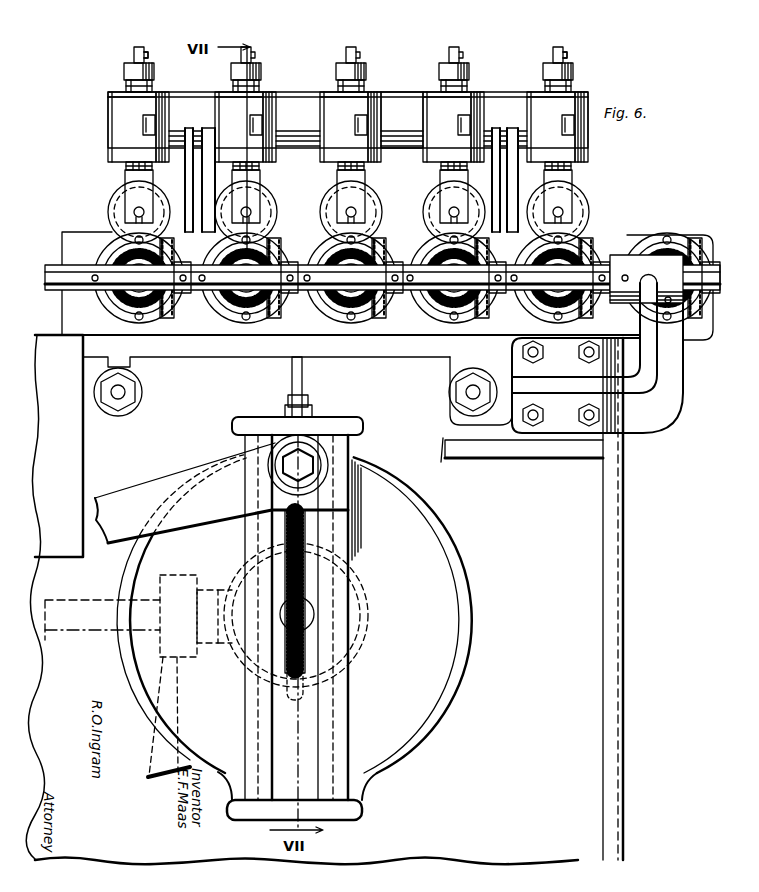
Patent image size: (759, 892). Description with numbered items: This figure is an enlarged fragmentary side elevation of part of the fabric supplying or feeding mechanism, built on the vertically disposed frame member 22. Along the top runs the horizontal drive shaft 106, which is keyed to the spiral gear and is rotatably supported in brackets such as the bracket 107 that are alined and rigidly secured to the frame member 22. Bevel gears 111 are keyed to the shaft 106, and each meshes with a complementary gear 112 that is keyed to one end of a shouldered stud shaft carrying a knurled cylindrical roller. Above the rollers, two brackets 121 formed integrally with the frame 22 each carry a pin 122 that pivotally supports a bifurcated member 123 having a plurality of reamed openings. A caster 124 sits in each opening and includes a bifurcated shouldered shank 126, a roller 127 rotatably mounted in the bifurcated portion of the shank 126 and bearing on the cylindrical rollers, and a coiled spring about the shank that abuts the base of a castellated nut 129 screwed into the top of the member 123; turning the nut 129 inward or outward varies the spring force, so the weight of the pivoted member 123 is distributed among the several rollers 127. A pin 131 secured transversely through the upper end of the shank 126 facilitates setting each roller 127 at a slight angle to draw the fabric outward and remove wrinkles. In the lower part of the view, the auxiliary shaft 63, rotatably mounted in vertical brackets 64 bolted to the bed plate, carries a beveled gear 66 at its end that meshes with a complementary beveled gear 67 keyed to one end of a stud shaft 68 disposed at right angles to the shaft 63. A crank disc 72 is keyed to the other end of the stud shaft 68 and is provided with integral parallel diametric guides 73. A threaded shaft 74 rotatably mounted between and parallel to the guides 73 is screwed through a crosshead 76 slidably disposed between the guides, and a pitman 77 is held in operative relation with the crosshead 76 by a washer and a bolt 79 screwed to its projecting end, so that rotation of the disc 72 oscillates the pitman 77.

The vertical frame member 22 is at (603, 708).
The auxiliary shaft 63 is at (67, 600).
The vertical brackets 64 is at (152, 743).
The beveled gear 66 is at (223, 587).
The complementary beveled gear 67 is at (368, 593).
The stud shaft 68 is at (300, 615).
The crank disc 72 is at (455, 673).
The parallel diametric guides 73 is at (246, 723).
The threaded shaft 74 is at (282, 541).
The crosshead 76 is at (282, 515).
The pitman 77 is at (145, 490).
The bolt 79 is at (303, 468).
The horizontal drive shaft 106 is at (52, 272).
The bracket 107 is at (668, 374).
The bevel gears 111 is at (281, 243).
The complementary gear 112 is at (115, 308).
The brackets 121 is at (176, 179).
The pin 122 is at (145, 124).
The bifurcated member 123 is at (110, 111).
The caster 124 is at (372, 165).
The bifurcated shouldered shank 126 is at (448, 57).
The roller 127 is at (107, 217).
The castellated nut 129 is at (543, 76).
The pin 131 is at (553, 59).